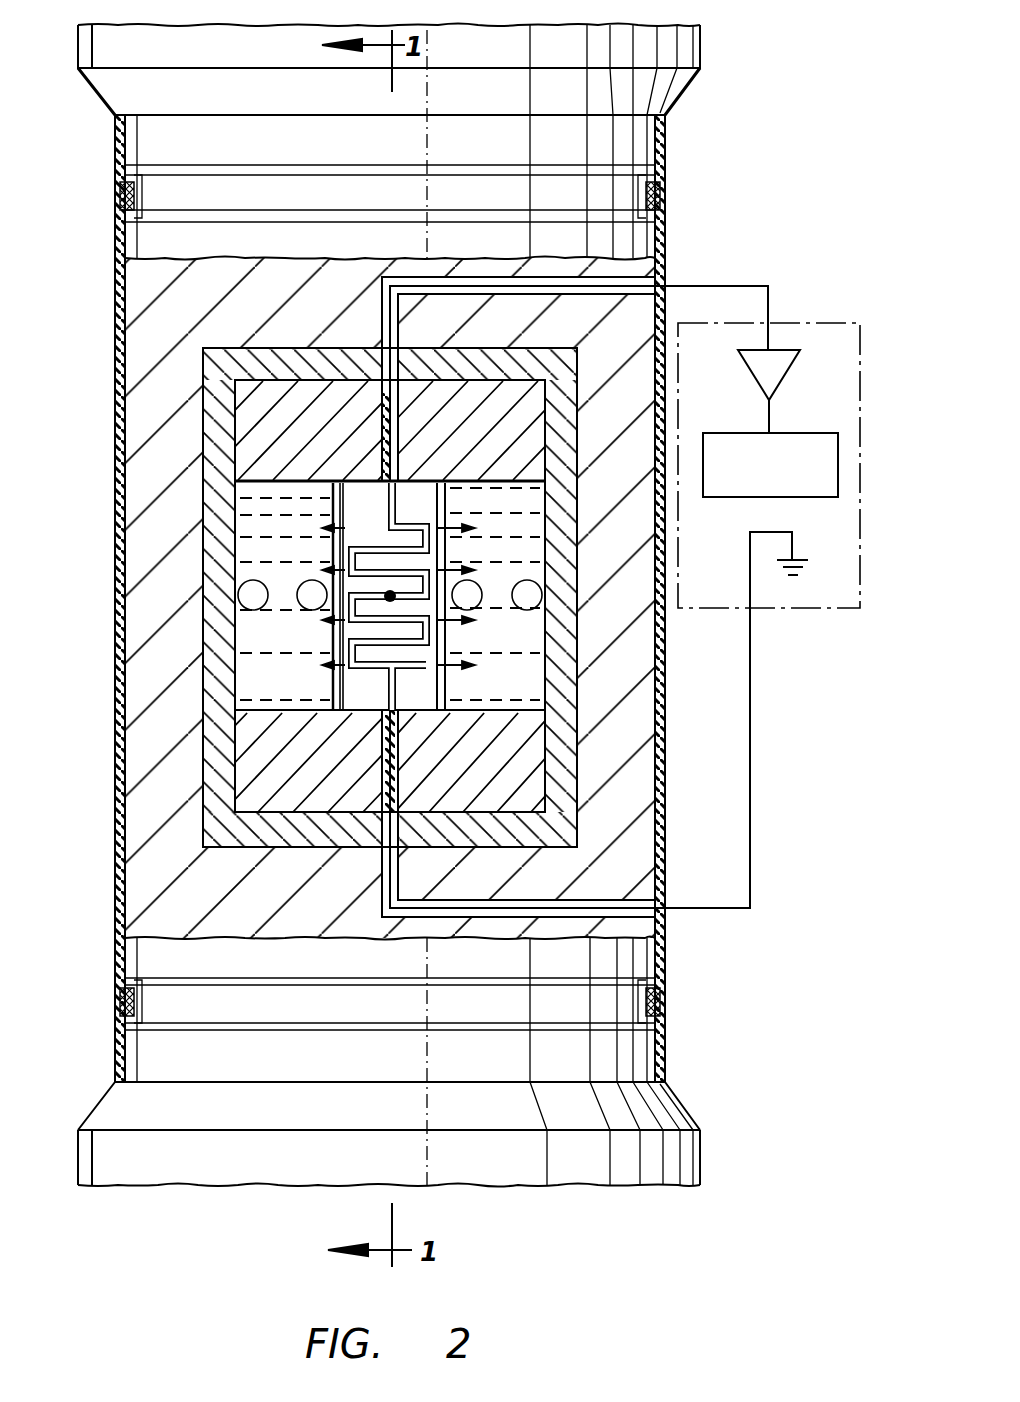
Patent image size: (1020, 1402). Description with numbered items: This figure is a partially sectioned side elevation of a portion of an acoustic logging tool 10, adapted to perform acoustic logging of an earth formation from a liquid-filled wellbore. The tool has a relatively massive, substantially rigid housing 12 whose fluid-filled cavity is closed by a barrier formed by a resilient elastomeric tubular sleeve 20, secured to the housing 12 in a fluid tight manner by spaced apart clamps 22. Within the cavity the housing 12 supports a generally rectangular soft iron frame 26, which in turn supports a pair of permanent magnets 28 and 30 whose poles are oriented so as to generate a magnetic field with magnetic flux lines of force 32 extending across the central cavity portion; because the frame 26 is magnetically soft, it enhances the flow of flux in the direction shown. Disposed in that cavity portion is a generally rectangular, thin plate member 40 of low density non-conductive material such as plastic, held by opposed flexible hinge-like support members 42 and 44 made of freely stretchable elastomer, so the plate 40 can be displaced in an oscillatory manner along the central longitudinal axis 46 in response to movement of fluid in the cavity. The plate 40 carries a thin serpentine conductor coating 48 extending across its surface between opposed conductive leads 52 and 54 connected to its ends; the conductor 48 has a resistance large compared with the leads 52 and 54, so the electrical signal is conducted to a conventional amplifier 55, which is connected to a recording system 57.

The logging tool 10 is at (696, 11).
The housing 12 is at (551, 27).
The resilient elastomeric tubular sleeve 20 is at (115, 537).
The clamps 22 is at (667, 187).
The soft iron frame 26 is at (217, 350).
The permanent magnet 28 is at (262, 483).
The permanent magnet 30 is at (480, 712).
The magnetic flux lines of force 32 is at (483, 568).
The plate member 40 is at (364, 680).
The flexible hinge-like support member 42 is at (367, 712).
The flexible hinge-like support member 44 is at (340, 483).
The central longitudinal axis 46 is at (390, 600).
The conductor coating 48 is at (350, 552).
The conductive lead 52 is at (397, 485).
The conductive lead 54 is at (398, 708).
The amplifier 55 is at (783, 372).
The recording system 57 is at (805, 497).